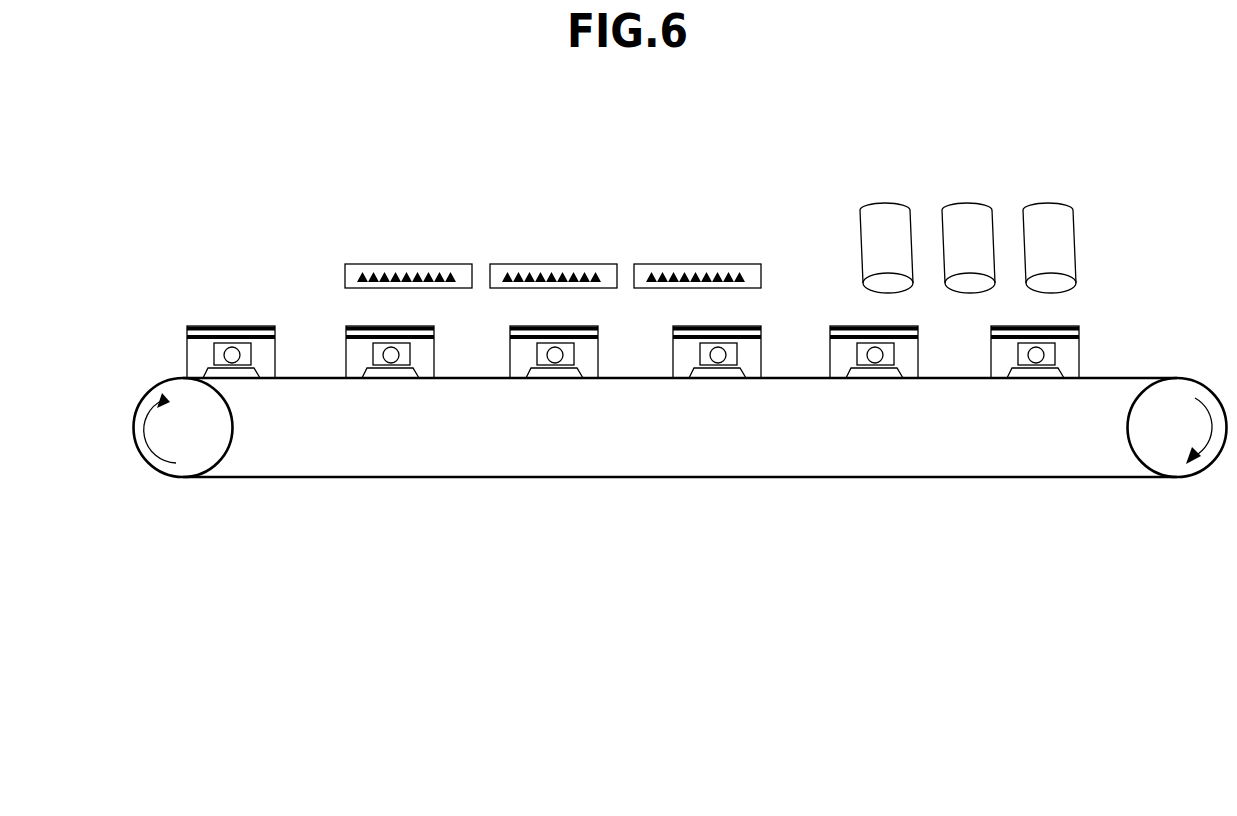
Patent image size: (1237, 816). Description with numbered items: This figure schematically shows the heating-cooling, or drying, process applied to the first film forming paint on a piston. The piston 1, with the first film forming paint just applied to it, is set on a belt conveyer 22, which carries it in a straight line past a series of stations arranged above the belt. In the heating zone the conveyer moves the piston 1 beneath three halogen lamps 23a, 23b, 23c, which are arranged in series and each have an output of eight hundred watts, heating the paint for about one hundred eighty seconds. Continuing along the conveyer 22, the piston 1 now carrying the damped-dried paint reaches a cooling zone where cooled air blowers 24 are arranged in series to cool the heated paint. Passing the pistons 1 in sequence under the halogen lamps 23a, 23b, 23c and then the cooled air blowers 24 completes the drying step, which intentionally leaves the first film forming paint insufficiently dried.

The piston 1 is at (193, 326).
The belt conveyer 22 is at (702, 506).
The halogen lamp 23a is at (408, 270).
The halogen lamp 23b is at (558, 270).
The halogen lamp 23c is at (698, 270).
The cooled air blowers 24 is at (1045, 203).